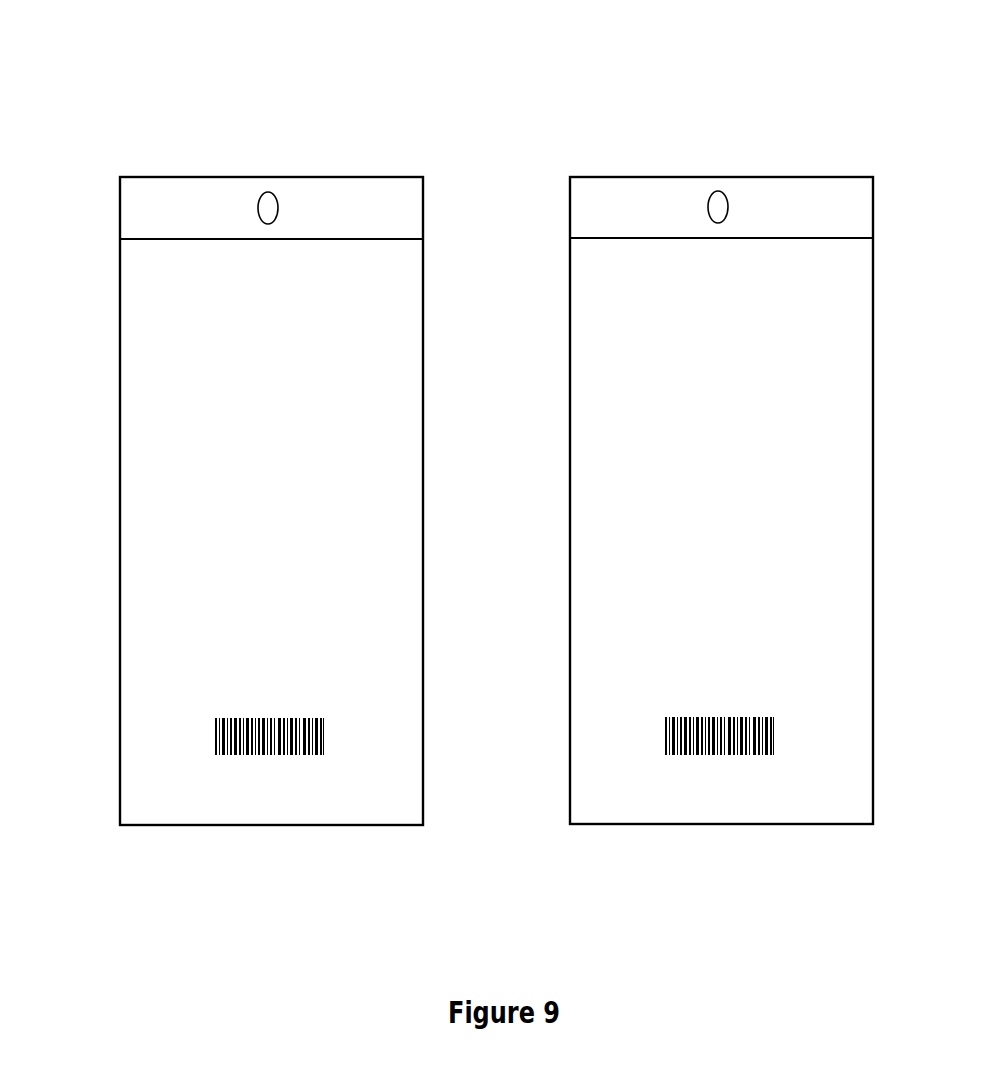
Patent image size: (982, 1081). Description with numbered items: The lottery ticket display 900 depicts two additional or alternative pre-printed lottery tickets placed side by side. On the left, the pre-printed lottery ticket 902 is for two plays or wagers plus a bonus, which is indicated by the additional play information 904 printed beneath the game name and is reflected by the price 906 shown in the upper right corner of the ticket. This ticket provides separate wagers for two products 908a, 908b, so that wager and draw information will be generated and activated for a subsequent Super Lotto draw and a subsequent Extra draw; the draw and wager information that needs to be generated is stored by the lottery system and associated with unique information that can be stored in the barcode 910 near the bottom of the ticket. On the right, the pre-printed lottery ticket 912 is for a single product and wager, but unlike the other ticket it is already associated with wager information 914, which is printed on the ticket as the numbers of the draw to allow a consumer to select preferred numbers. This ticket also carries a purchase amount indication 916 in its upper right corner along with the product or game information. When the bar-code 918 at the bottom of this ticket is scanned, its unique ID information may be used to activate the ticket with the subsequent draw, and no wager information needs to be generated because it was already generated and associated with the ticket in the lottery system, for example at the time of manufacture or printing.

The lottery ticket display 900 is at (490, 424).
The pre-printed lottery ticket 902 is at (160, 177).
The additional play information 904 is at (185, 325).
The price 906 is at (405, 276).
The product 908a is at (345, 362).
The product 908b is at (310, 395).
The barcode 910 is at (215, 737).
The pre-printed lottery ticket 912 is at (632, 176).
The wager information 914 is at (812, 477).
The purchase amount indication 916 is at (852, 278).
The bar-code 918 is at (782, 736).